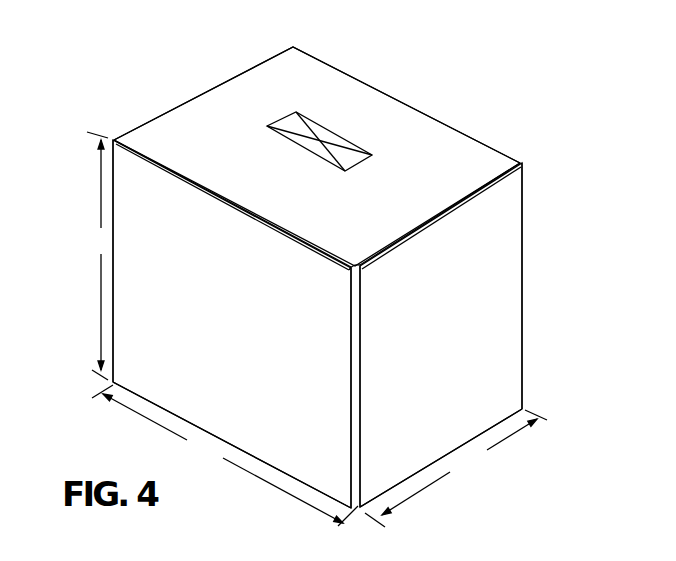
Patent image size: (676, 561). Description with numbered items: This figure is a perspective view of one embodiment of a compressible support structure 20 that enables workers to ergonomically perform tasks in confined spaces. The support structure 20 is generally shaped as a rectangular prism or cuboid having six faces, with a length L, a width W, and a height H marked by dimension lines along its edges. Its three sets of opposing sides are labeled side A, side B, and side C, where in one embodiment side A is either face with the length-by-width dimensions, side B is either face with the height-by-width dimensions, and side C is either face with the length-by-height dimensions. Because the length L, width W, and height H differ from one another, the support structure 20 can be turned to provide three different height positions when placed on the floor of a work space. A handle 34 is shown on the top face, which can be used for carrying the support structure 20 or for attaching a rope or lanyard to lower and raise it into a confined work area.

The compressible support structure 20 is at (437, 97).
The handle 34 is at (288, 120).
The side A is at (339, 216).
The side B is at (435, 352).
The side C is at (220, 334).
The height H is at (90, 251).
The length L is at (193, 466).
The width W is at (461, 471).